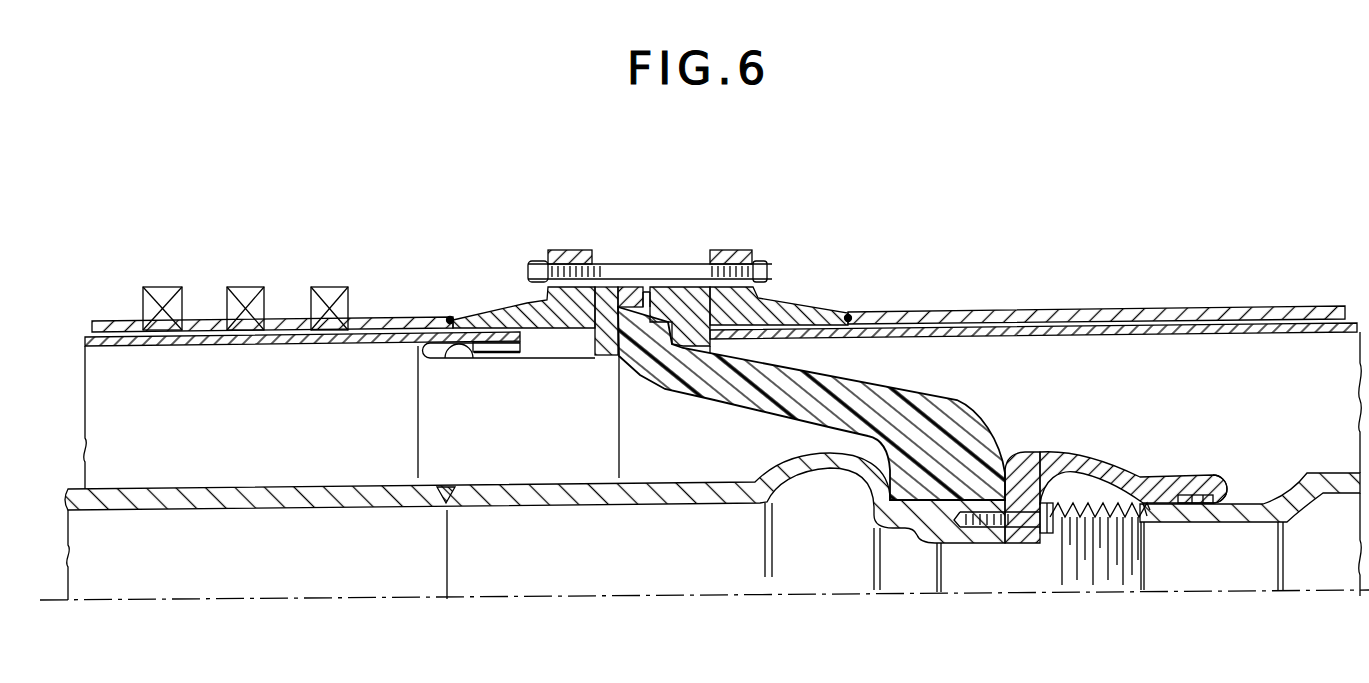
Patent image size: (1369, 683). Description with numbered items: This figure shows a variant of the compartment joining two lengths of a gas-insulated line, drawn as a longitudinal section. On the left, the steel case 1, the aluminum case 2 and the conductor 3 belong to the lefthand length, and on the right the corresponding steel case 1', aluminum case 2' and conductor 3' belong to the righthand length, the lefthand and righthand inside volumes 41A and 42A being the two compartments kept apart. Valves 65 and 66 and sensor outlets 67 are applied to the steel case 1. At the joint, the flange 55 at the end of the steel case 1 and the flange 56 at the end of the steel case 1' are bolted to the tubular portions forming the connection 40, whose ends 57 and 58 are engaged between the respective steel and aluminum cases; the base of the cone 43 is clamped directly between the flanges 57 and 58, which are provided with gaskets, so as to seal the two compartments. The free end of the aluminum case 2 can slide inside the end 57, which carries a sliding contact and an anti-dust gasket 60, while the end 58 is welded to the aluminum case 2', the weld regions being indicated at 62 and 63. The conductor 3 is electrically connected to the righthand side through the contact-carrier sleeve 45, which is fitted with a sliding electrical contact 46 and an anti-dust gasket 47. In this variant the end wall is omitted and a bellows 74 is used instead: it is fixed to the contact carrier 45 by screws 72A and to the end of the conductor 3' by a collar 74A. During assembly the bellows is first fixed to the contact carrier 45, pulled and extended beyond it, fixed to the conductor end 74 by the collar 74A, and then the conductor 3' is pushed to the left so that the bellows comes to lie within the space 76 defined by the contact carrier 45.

The steel case 1 is at (272, 298).
The steel case 1' is at (1096, 286).
The aluminum case 2 is at (302, 365).
The aluminum case 2' is at (1033, 355).
The conductor 3 is at (535, 526).
The conductor 3' is at (1250, 531).
The flange joint assembly 40 is at (660, 236).
The inside volume 41A is at (573, 445).
The inside volume 42A is at (1088, 398).
The cone 43 is at (737, 383).
The contact-carrier sleeve 45 is at (1052, 477).
The sliding electrical contact 46 is at (1195, 476).
The anti-dust gasket 47 is at (1217, 478).
The flange 55 is at (522, 312).
The flange 56 is at (777, 302).
The end of tubular portion 57 is at (600, 300).
The end of tubular portion 58 is at (680, 302).
The anti-dust gasket 60 is at (463, 358).
The weld 62 is at (449, 317).
The weld 63 is at (848, 315).
The valve 65 is at (163, 288).
The valve 66 is at (246, 288).
The sensor outlets 67 is at (330, 288).
The screws 72A is at (1020, 520).
The end of conductor 74 is at (1160, 520).
The collar 74A is at (1143, 503).
The space 76 is at (1063, 483).